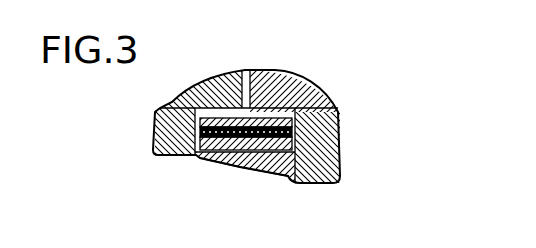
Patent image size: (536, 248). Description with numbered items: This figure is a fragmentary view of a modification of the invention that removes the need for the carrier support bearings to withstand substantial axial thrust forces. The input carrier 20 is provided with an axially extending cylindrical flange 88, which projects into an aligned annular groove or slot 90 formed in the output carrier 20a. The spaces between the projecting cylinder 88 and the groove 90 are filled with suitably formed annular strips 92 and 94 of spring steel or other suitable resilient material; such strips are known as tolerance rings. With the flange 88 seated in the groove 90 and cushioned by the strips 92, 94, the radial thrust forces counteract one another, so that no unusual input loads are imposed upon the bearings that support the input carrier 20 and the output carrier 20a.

The input carrier 20 is at (343, 138).
The output carrier 20a is at (251, 172).
The cylindrical flange 88 is at (274, 122).
The annular groove 90 is at (222, 117).
The resilient annular strip 92 is at (218, 158).
The resilient annular strip 94 is at (257, 117).